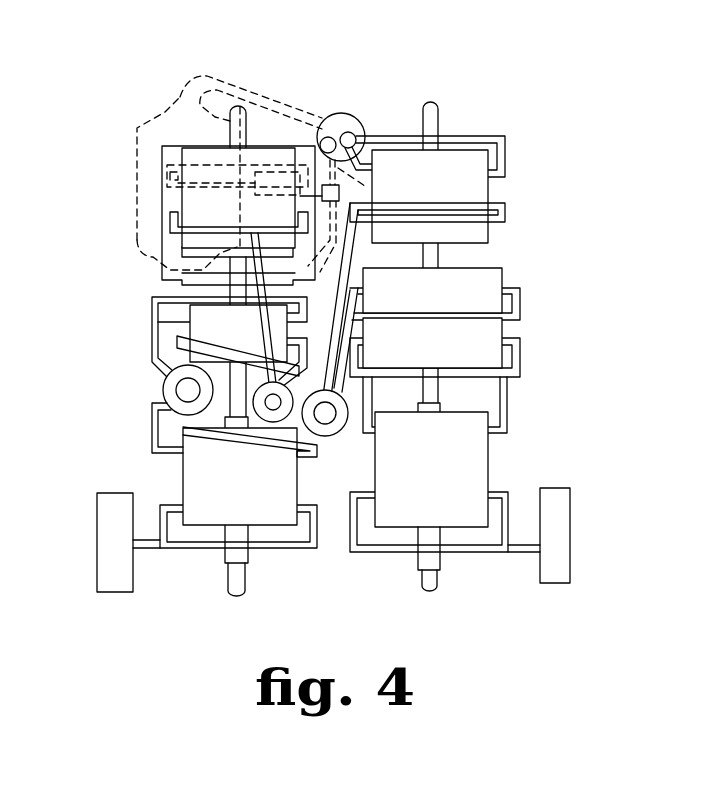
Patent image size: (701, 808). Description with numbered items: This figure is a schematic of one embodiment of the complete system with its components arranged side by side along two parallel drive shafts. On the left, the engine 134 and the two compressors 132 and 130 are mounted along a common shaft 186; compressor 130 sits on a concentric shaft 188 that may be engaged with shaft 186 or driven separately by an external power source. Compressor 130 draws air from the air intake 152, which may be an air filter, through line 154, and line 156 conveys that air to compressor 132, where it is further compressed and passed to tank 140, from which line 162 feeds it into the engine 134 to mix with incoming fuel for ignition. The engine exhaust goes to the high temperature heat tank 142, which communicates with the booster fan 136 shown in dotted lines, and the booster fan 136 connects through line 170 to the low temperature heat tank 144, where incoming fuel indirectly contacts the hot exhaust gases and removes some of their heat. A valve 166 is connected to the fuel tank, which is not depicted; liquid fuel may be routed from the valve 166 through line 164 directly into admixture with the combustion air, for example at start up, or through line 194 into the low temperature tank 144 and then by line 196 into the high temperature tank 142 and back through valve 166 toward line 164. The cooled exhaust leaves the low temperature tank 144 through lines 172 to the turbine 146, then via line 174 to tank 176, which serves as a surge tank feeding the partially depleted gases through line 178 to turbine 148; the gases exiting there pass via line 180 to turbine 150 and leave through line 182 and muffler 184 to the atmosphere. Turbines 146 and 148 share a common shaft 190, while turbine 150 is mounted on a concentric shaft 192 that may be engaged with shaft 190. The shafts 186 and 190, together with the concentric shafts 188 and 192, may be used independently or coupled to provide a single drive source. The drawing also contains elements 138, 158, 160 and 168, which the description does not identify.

The compressor 130 is at (198, 470).
The compressor 132 is at (190, 325).
The engine 134 is at (170, 193).
The booster fan 136 is at (150, 222).
The left pivot wheel 138 is at (163, 390).
The tank 140 is at (273, 422).
The high temperature heat tank 142 is at (167, 273).
The low temperature heat tank 144 is at (330, 116).
The turbine 146 is at (482, 188).
The turbine 148 is at (497, 330).
The turbine 150 is at (482, 459).
The air intake 152 is at (107, 541).
The line 154 is at (155, 547).
The line 156 is at (155, 420).
The upper tilted plate 158 is at (152, 352).
The connecting rod 160 is at (293, 360).
The line 162 is at (200, 288).
The line 164 is at (157, 173).
The valve 166 is at (300, 196).
The right connecting rod 168 is at (345, 257).
The line 170 is at (277, 100).
The line 172 is at (357, 136).
The line 174 is at (343, 278).
The tank 176 is at (345, 403).
The line 178 is at (353, 328).
The line 180 is at (510, 407).
The line 182 is at (488, 548).
The muffler 184 is at (572, 530).
The common shaft 186 is at (242, 585).
The concentric shaft 188 is at (248, 558).
The common shaft 190 is at (423, 582).
The concentric shaft 192 is at (422, 563).
The line 194 is at (360, 189).
The line 196 is at (313, 133).